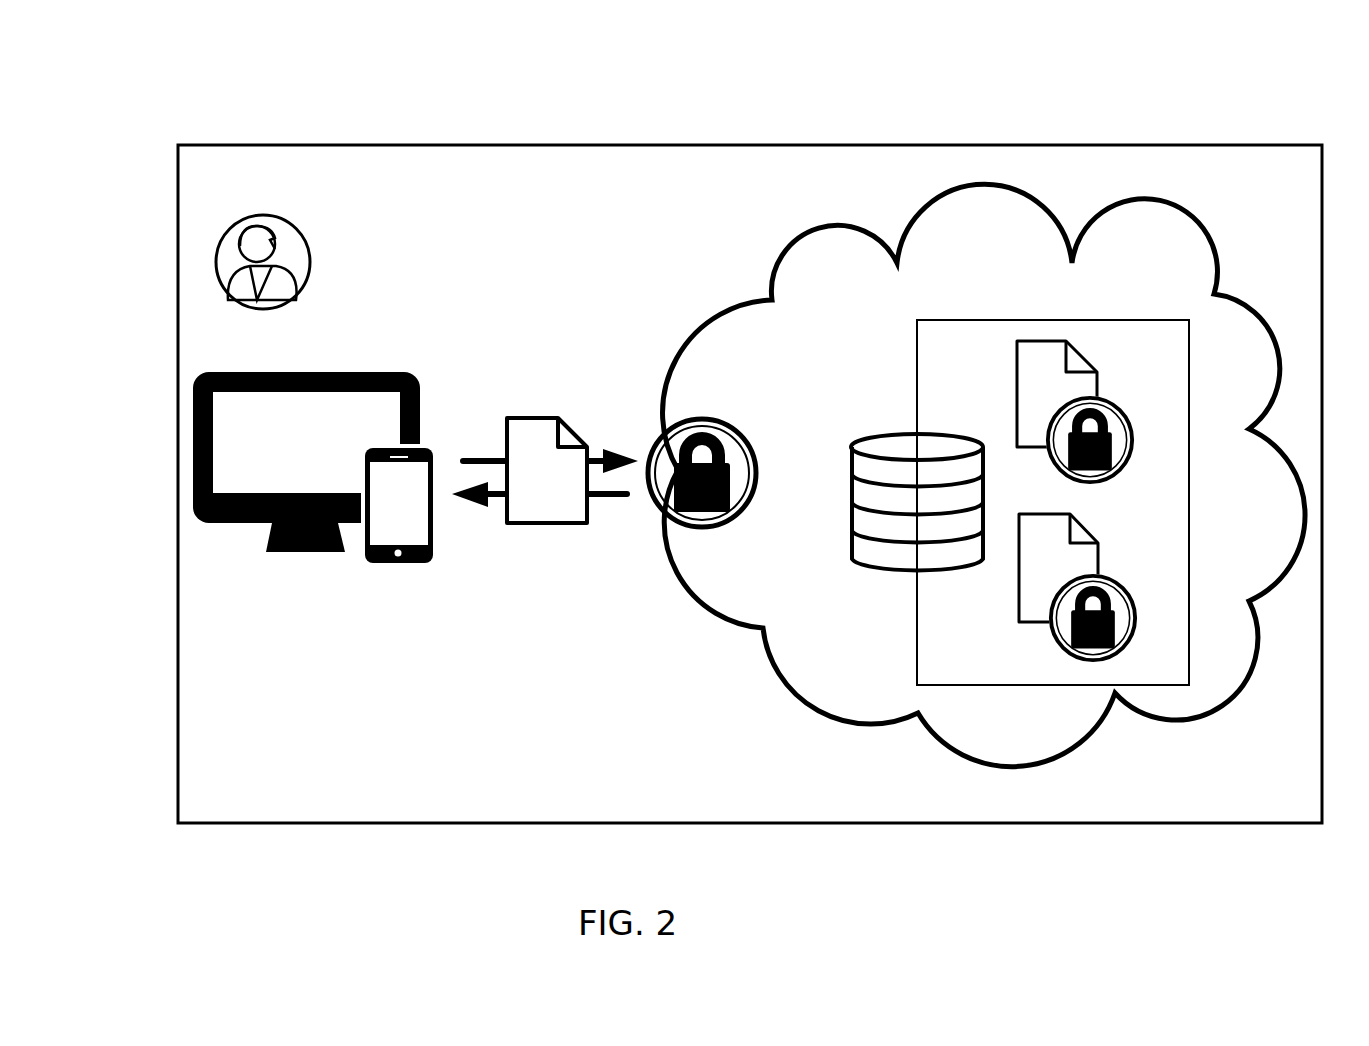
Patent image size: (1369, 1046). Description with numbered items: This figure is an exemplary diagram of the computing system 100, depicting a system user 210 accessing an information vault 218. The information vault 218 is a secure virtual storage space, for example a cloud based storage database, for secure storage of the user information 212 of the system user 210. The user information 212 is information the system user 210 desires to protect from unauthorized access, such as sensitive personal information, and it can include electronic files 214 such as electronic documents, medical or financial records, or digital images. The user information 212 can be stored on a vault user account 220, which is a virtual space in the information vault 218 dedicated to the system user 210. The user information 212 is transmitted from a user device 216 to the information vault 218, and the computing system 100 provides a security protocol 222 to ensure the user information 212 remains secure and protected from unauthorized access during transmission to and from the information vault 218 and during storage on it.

The computing system 100 is at (228, 100).
The system user 210 is at (218, 246).
The user device 216 is at (200, 350).
The user information 212 is at (537, 523).
The security protocol 222 is at (722, 530).
The information vault 218 is at (1003, 767).
The vault user account 220 is at (1013, 320).
The electronic files 214 is at (1075, 338).